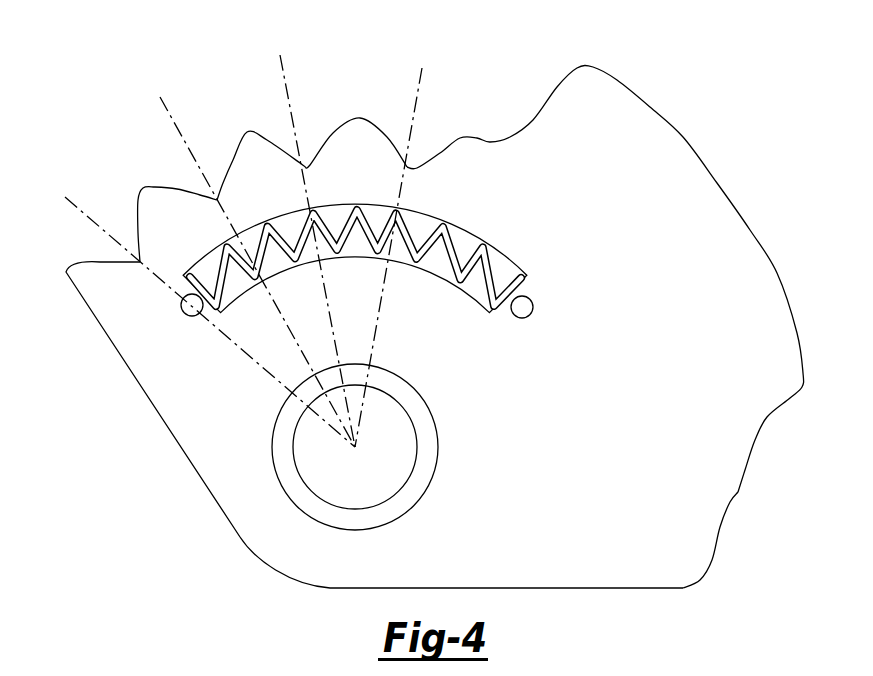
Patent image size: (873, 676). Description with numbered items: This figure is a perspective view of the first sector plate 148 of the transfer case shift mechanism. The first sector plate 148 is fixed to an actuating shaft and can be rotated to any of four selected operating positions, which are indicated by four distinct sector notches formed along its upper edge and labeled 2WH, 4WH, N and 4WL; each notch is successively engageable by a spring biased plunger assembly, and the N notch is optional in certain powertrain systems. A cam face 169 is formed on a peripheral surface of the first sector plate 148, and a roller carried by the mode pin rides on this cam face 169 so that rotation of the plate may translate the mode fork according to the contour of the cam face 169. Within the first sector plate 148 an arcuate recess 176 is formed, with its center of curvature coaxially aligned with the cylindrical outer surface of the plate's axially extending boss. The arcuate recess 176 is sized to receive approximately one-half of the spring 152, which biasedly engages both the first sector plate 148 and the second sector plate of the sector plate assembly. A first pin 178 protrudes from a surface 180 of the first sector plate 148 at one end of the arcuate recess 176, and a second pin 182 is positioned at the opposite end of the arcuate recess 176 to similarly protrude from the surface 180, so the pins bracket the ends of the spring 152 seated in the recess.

The first sector plate 148 is at (446, 327).
The spring 152 is at (472, 290).
The cam face 169 is at (738, 490).
The arcuate recess 176 is at (470, 232).
The first pin 178 is at (190, 316).
The surface 180 is at (213, 450).
The second pin 182 is at (522, 310).
The N sector notch N is at (251, 261).
The 4WH sector notch 4WH is at (306, 235).
The 4WL sector notch 4WL is at (189, 307).
The 2WH sector notch 2WH is at (401, 246).